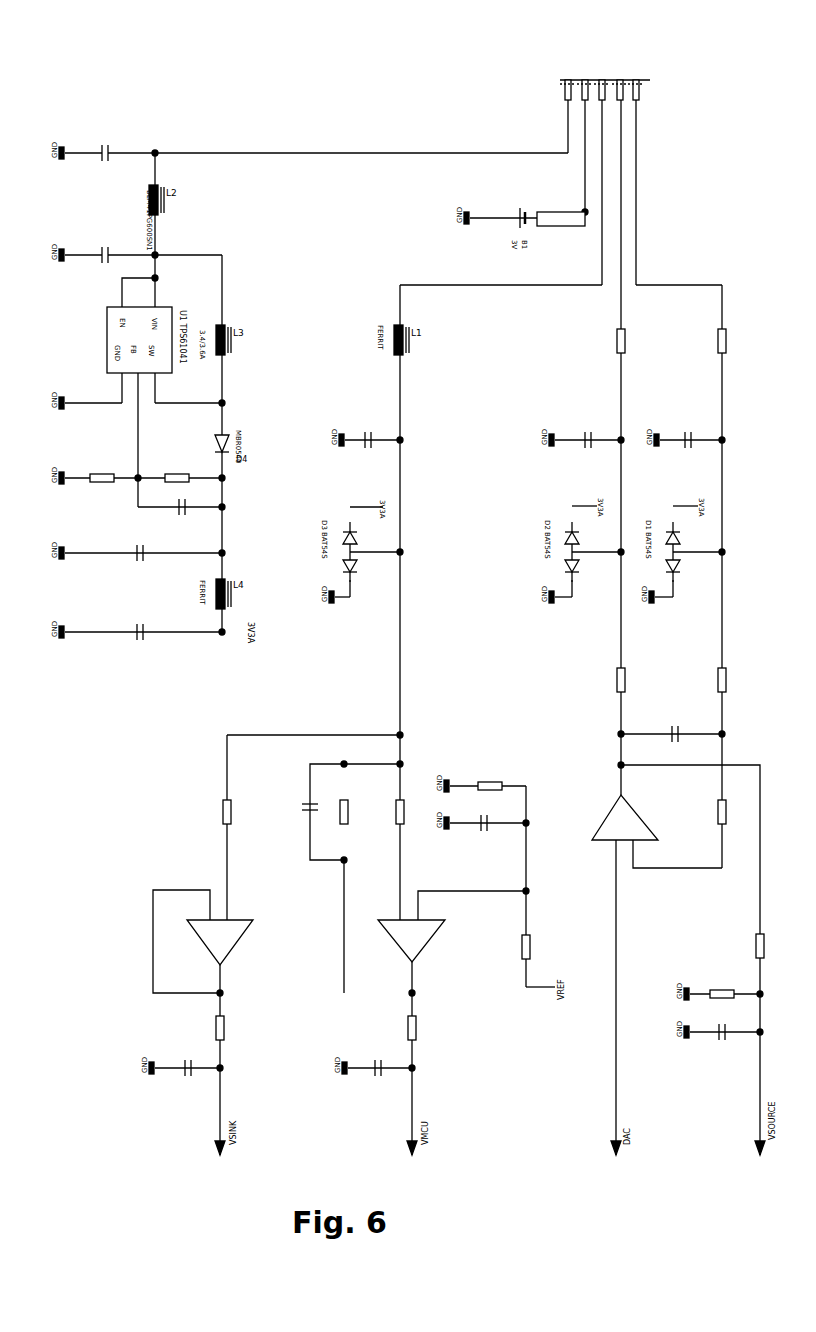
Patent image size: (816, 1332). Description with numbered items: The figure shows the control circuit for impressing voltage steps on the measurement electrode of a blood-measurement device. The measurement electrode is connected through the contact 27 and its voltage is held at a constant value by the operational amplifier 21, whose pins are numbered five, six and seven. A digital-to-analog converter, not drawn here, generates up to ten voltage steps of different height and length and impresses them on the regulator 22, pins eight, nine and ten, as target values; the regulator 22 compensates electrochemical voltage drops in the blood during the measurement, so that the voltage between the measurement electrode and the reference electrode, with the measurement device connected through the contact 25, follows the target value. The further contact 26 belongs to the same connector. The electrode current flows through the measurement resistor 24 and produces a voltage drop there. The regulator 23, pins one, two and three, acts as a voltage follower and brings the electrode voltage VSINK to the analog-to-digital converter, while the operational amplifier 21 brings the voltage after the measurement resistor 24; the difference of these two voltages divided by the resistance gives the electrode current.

The operational amplifier 21 is at (425, 940).
The regulator 22 is at (612, 810).
The regulator 23 is at (232, 940).
The measurement resistor 24 is at (350, 805).
The contact 25 is at (638, 96).
The connector pin 26 is at (622, 80).
The contact 27 is at (602, 80).